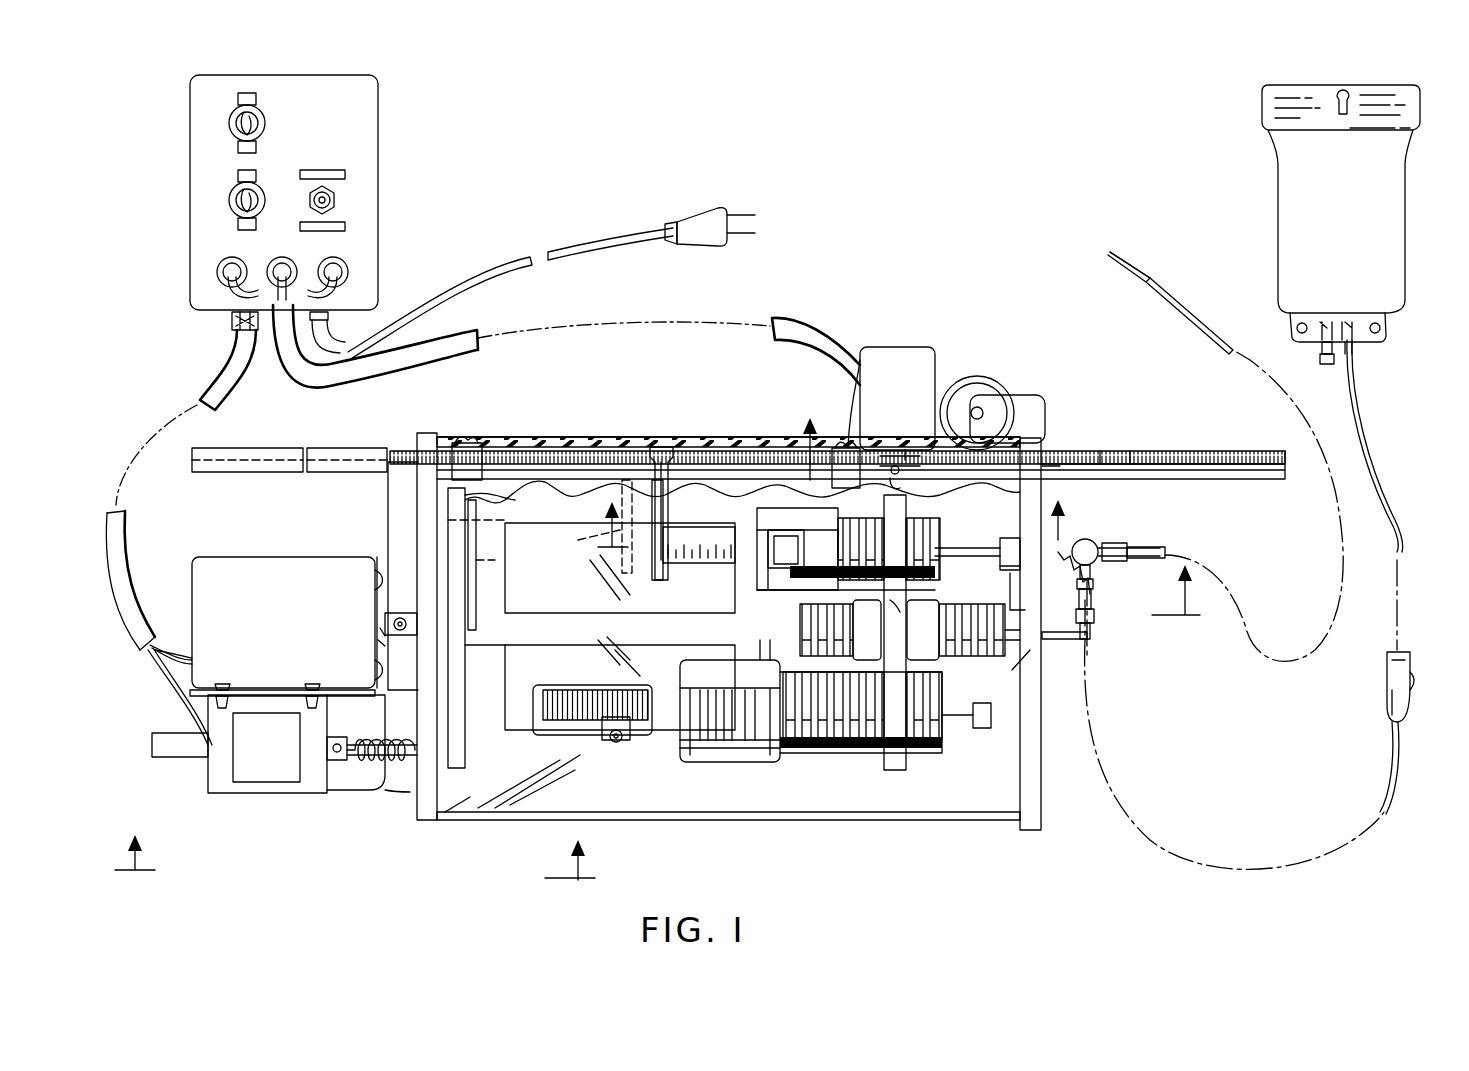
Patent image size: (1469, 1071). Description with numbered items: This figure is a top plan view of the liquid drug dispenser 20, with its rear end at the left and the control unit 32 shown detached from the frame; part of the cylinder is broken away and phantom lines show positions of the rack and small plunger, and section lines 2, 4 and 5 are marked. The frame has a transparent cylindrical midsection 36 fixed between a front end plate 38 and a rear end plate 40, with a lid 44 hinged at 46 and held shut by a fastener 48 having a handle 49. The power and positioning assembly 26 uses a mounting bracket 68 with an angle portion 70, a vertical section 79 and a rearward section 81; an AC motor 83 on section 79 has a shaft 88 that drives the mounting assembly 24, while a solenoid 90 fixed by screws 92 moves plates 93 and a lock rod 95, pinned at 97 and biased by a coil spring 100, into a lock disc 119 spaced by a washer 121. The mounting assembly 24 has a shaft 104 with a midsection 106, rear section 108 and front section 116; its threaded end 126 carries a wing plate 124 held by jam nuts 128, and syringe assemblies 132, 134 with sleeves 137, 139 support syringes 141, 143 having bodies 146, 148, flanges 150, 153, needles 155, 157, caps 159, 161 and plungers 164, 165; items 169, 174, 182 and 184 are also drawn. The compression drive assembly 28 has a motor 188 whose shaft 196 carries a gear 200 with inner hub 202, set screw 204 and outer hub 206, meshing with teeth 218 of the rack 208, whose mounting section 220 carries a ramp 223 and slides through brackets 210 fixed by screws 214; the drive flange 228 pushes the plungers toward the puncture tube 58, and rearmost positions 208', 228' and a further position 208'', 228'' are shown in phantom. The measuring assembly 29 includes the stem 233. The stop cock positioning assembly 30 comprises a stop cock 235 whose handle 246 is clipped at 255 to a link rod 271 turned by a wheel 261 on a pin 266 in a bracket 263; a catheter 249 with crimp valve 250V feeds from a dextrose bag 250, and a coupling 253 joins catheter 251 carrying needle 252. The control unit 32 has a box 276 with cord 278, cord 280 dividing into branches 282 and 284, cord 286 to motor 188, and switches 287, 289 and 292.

The liquid drug dispenser 20 is at (912, 278).
The rotatable drug mounting assembly 24 is at (1008, 664).
The power and positioning assembly 26 is at (187, 792).
The compression drive assembly 28 is at (593, 437).
The measuring assembly 29 is at (655, 436).
The stop cock positioning assembly 30 is at (1020, 395).
The control unit 32 is at (386, 116).
The transparent cylindrical midsection 36 is at (534, 438).
The front upright end plate 38 is at (1030, 825).
The rear upright end plate 40 is at (430, 820).
The transparent lid 44 is at (540, 700).
The hinge 46 is at (585, 515).
The fastener 48 is at (625, 742).
The handle 49 is at (612, 742).
The puncture tube 58 is at (1014, 552).
The mounting bracket 68 is at (392, 793).
The lower angle shape portion 70 is at (390, 540).
The vertical section 79 is at (374, 588).
The rearwardly extending section 81 is at (272, 690).
The AC motor 83 is at (234, 567).
The motor shaft 88 is at (385, 616).
The solenoid 90 is at (263, 793).
The screws 92 is at (218, 690).
The metal plates 93 is at (165, 750).
The lock rod 95 is at (380, 762).
The vertical pin 97 is at (337, 760).
The coil spring 100 is at (360, 765).
The cylindrical shaft 104 is at (548, 630).
The large midsection 106 is at (575, 622).
The smaller cylindrical end section 108 is at (392, 630).
The smaller cylindrical section 116 is at (1089, 668).
The circular disc lock plate 119 is at (458, 595).
The spacer washer 121 is at (462, 635).
The wing plate 124 is at (900, 780).
The threaded front end 126 is at (1025, 640).
The jam nuts 128 is at (870, 636).
The syringe assembly 132 is at (792, 768).
The syringe assembly 134 is at (878, 604).
The externally threaded sleeve 137 is at (902, 755).
The externally threaded sleeve 139 is at (925, 530).
The syringe 141 is at (550, 738).
The syringe 143 is at (750, 558).
The tubular body 146 is at (705, 670).
The tubular body 148 is at (765, 526).
The flange 150 is at (705, 752).
The flange 153 is at (790, 565).
The needle 155 is at (958, 735).
The needle 157 is at (948, 562).
The rubber cylindrical puncture cap 159 is at (998, 718).
The rubber cylindrical puncture cap 161 is at (1015, 582).
The plunger tube 164 is at (640, 690).
The plunger tube 165 is at (682, 568).
The syringe barrel 169 is at (728, 760).
The syringe plunger 174 is at (752, 752).
The syringe 182 is at (756, 668).
The bar 184 is at (822, 586).
The reversible drive AC motor 188 is at (882, 345).
The shaft 196 is at (900, 485).
The cylindrical gear 200 is at (845, 460).
The inner hub 202 is at (858, 405).
The set screw 204 is at (912, 455).
The outer hub 206 is at (897, 462).
The gear rack 208 is at (861, 438).
The rearmost rack position 208' is at (247, 440).
The lead screw extension 208'' is at (343, 440).
The mounting brackets 210 is at (455, 446).
The screws 214 is at (466, 440).
The linear gear teeth section 218 is at (1180, 456).
The mounting section 220 is at (1252, 478).
The wheel drive ramp 223 is at (1115, 454).
The L-shaped drive flange 228 is at (622, 544).
The rearmost flange position 228' is at (512, 525).
The pin position 228'' is at (586, 557).
The curved measuring stem 233 is at (672, 452).
The stop cock valve 235 is at (1090, 562).
The stop cock handle 246 is at (1095, 580).
The catheter 249 is at (1355, 405).
The bag 250 is at (1340, 233).
The crimp valve 250V is at (1398, 680).
The flexible plastic catheter 251 is at (1158, 548).
The needle 252 is at (1136, 265).
The sleeve coupling 253 is at (1112, 535).
The linkage clip 255 is at (1090, 592).
The wheel 261 is at (972, 392).
The U-shaped bracket 263 is at (1022, 422).
The headed pin 266 is at (980, 408).
The link rod 271 is at (1048, 470).
The box housing 276 is at (378, 258).
The electrical cord 278 is at (580, 240).
The electrical cord 280 is at (228, 378).
The cord branch 282 is at (170, 655).
The cord branch 284 is at (152, 665).
The third cord 286 is at (457, 345).
The switch 287 is at (235, 205).
The switch 289 is at (240, 128).
The switch 292 is at (332, 198).
The section line 2 is at (355, 850).
The section line 4 is at (827, 513).
The section line 5 is at (997, 512).